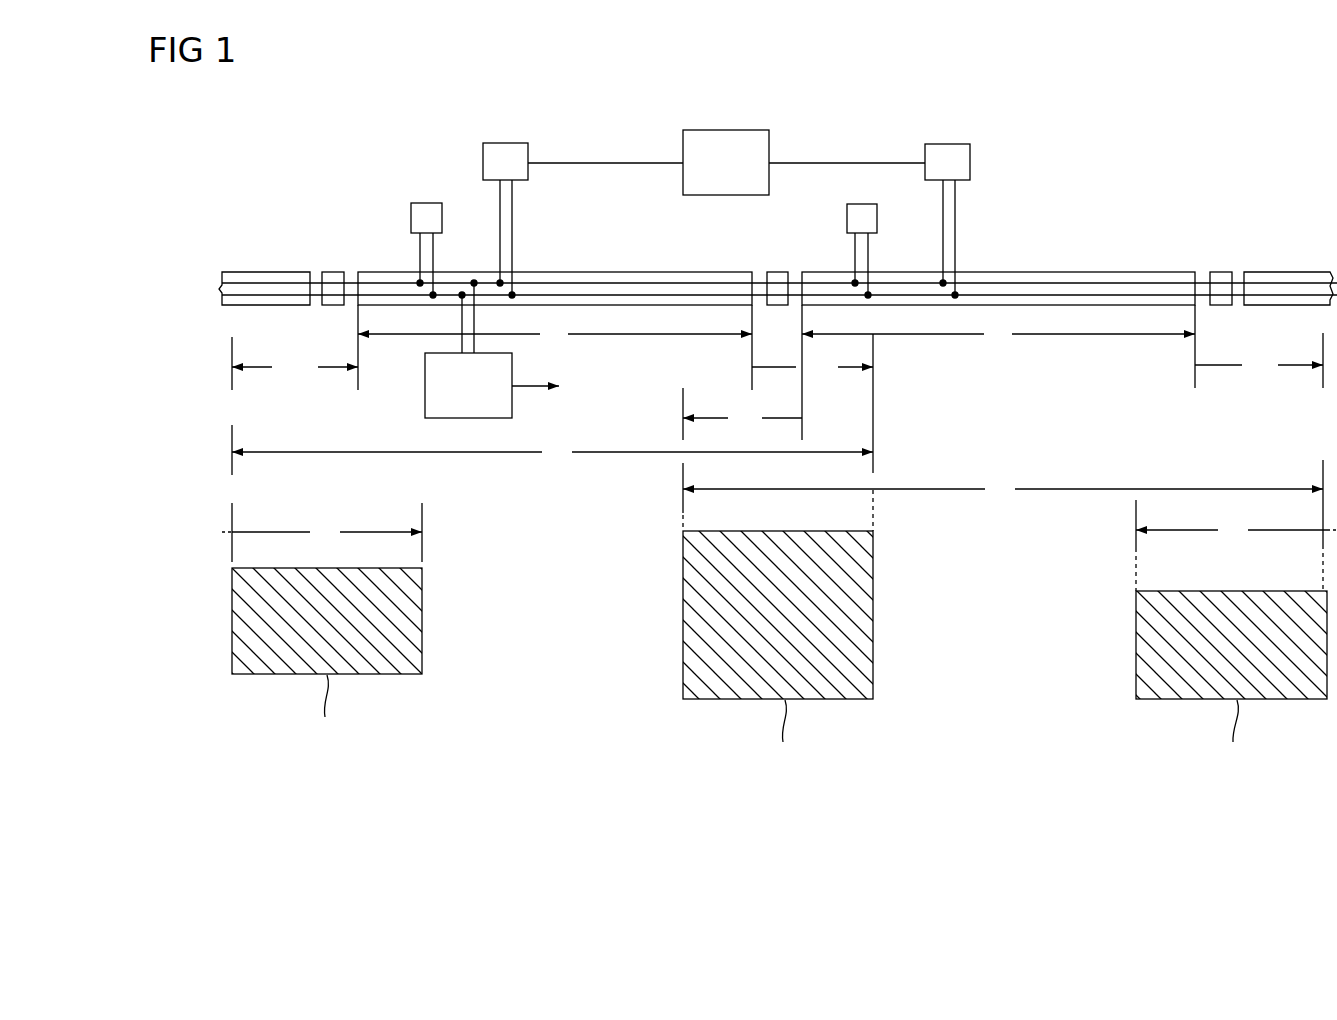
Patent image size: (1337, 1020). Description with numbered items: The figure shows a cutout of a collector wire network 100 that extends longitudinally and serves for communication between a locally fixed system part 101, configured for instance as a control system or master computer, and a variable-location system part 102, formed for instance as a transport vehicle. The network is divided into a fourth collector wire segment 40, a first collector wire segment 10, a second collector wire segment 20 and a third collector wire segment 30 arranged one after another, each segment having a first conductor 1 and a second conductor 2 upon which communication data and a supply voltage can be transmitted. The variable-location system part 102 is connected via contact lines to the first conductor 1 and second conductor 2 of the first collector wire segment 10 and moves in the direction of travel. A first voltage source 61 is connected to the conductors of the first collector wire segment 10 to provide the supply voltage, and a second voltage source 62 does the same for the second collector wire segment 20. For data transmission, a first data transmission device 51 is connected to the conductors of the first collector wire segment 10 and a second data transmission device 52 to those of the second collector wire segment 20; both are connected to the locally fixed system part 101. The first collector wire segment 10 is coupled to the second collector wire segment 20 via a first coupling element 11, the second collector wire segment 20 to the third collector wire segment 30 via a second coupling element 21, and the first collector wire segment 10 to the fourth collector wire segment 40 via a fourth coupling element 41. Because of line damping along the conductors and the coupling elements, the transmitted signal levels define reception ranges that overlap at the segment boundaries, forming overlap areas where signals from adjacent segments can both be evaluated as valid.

The first conductor 1 is at (621, 282).
The second conductor 2 is at (664, 294).
The first collector wire segment 10 is at (546, 234).
The first coupling element 11 is at (778, 272).
The second collector wire segment 20 is at (991, 229).
The second coupling element 21 is at (1218, 271).
The third collector wire segment 30 is at (1273, 229).
The fourth collector wire segment 40 is at (265, 232).
The fourth coupling element 41 is at (335, 272).
The first data transmission device 51 is at (505, 143).
The second data transmission device 52 is at (947, 144).
The first voltage source 61 is at (424, 203).
The second voltage source 62 is at (877, 215).
The collector wire network 100 is at (502, 741).
The locally fixed system part 101 is at (728, 130).
The variable-location system part 102 is at (425, 397).